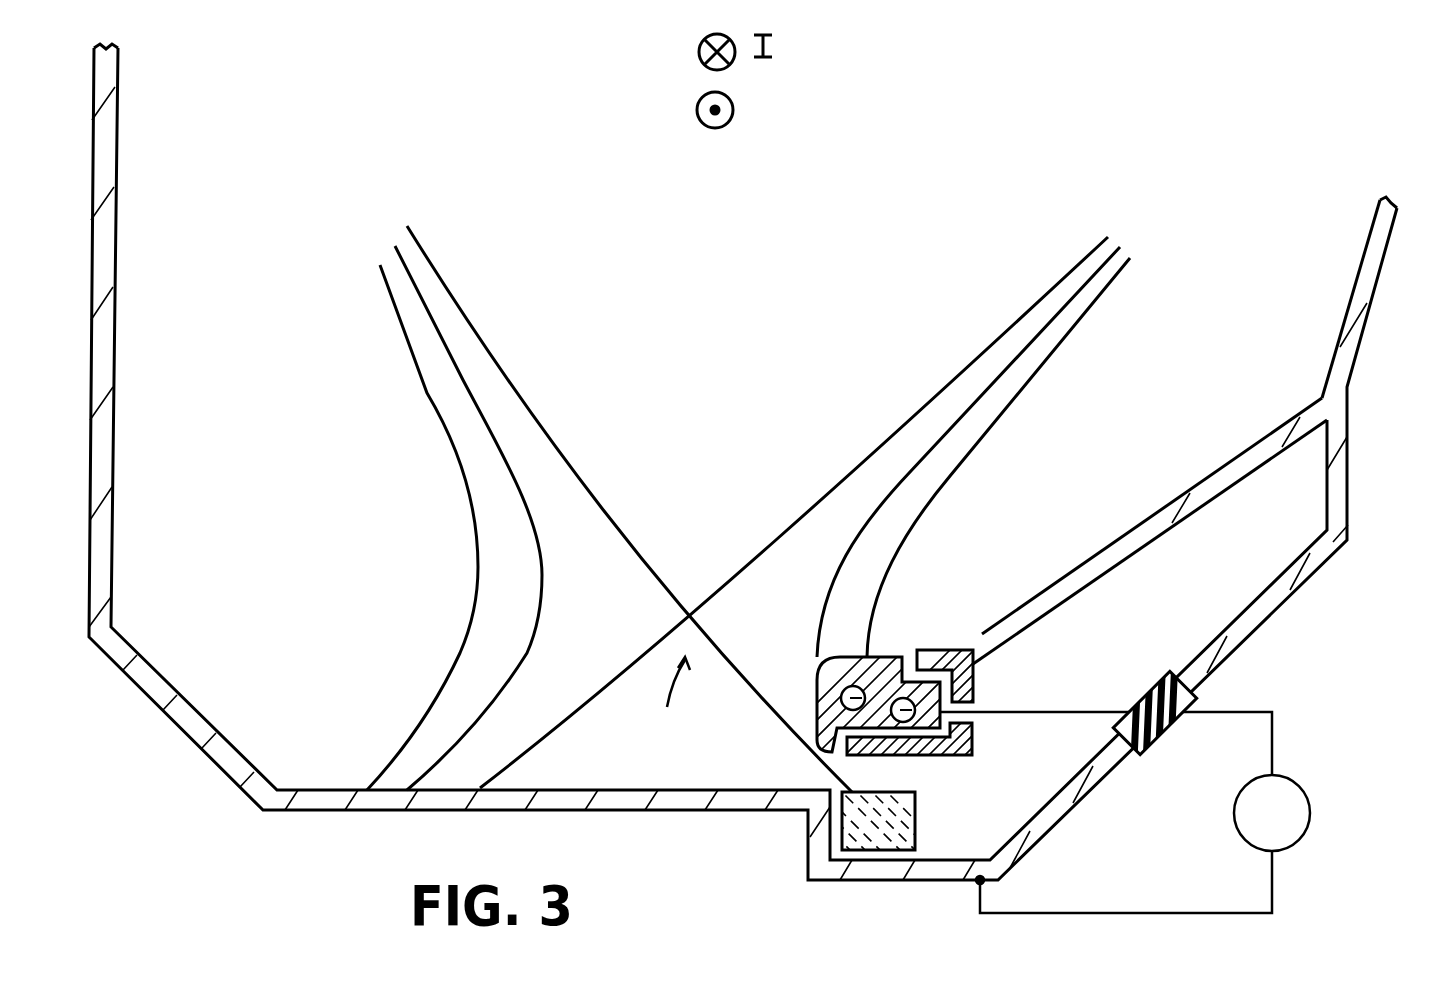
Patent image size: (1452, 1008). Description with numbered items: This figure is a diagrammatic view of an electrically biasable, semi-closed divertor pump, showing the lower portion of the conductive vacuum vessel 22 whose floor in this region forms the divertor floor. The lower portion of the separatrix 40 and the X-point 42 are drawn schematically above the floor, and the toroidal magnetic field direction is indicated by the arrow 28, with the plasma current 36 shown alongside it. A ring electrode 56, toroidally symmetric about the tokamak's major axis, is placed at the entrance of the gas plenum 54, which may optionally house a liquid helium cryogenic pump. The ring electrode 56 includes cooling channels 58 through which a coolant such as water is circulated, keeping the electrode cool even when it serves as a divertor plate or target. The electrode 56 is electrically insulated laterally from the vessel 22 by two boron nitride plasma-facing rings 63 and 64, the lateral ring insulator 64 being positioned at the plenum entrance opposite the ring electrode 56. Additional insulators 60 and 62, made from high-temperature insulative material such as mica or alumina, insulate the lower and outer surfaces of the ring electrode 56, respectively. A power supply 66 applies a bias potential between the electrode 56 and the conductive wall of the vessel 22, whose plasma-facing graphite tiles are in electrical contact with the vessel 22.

The vessel 22 is at (117, 372).
The arrow representing toroidal magnetic field 28 is at (698, 117).
The plasma current 36 is at (698, 53).
The separatrix 40 is at (587, 493).
The X-point 42 is at (662, 704).
The gas plenum 54 is at (1258, 563).
The ring electrode 56 is at (880, 657).
The cooling channels 58 is at (842, 708).
The insulator 60 is at (975, 737).
The insulator 62 is at (973, 683).
The plasma-facing ring 63 is at (938, 650).
The lateral ring insulator 64 is at (917, 820).
The power supply 66 is at (1297, 783).